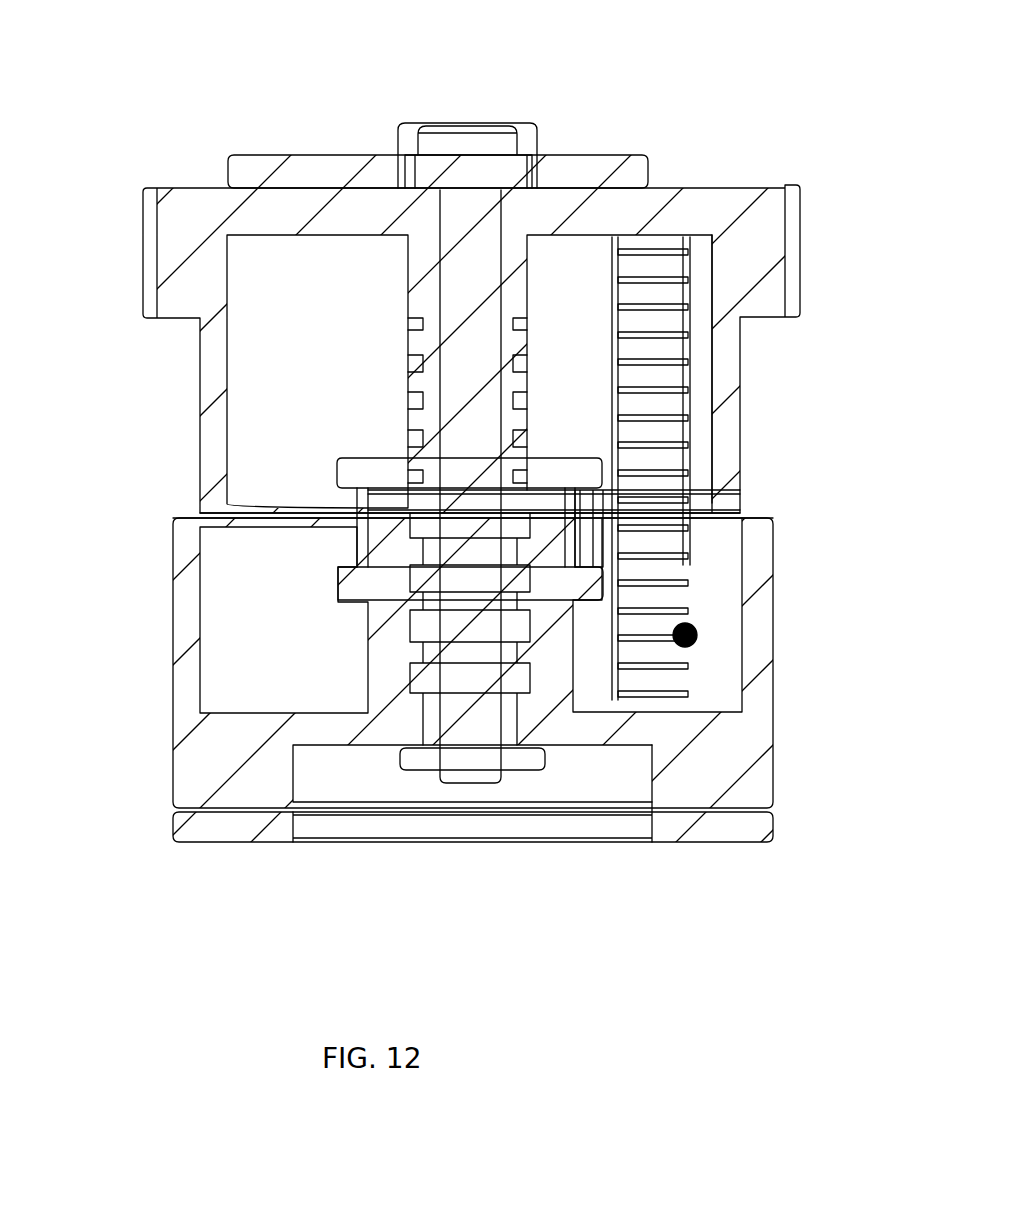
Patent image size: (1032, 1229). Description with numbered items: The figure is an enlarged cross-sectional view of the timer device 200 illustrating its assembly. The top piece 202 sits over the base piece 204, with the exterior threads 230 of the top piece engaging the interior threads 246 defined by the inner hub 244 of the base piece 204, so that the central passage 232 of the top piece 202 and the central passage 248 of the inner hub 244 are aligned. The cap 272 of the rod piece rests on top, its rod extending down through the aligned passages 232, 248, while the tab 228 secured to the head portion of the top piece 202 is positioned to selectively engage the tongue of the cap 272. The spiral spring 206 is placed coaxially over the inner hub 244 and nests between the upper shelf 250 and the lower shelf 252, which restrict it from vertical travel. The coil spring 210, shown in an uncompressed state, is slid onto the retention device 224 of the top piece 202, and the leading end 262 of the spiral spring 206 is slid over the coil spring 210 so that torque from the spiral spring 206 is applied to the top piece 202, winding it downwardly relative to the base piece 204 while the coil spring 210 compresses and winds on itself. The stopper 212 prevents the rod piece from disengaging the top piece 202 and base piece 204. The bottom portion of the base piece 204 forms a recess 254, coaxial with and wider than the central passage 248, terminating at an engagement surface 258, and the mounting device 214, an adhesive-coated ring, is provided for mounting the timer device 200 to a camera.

The timer device 200 is at (310, 18).
The top piece 202 is at (806, 253).
The base piece 204 is at (166, 745).
The spiral spring 206 is at (356, 545).
The coil spring 210 is at (685, 635).
The stopper 212 is at (545, 762).
The mounting device 214 is at (735, 838).
The retention device 224 is at (668, 325).
The tab 228 is at (463, 122).
The exterior threads 230 is at (515, 368).
The central passage 232 is at (500, 291).
The inner hub 244 is at (369, 648).
The interior threads 246 is at (530, 622).
The central passage 248 is at (432, 650).
The upper shelf 250 is at (337, 476).
The lower shelf 252 is at (340, 578).
The recess 254 is at (293, 775).
The engagement surface 258 is at (625, 752).
The leading end 262 is at (700, 507).
The cap 272 is at (268, 172).